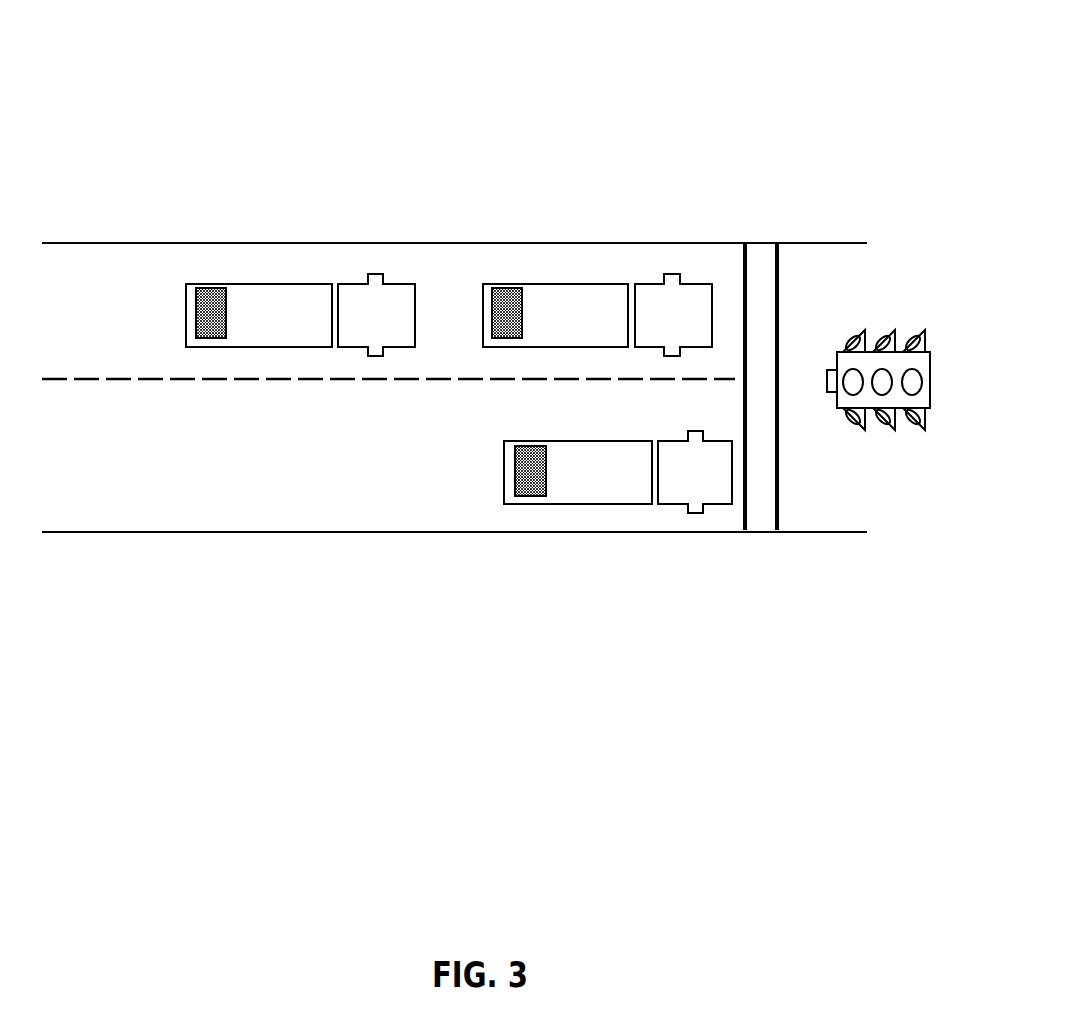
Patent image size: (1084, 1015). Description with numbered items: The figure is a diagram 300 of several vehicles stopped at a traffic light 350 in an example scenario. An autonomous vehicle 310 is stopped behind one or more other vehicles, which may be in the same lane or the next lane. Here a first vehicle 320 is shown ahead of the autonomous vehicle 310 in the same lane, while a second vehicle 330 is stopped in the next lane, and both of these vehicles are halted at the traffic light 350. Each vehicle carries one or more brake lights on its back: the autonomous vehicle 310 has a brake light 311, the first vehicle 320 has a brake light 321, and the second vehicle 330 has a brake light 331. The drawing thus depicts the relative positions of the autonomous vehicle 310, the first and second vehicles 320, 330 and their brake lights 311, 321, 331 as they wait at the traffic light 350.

The diagram 300 is at (873, 102).
The autonomous vehicle 310 is at (278, 284).
The brake light 311 is at (204, 288).
The first vehicle 320 is at (557, 284).
The brake light 321 is at (502, 288).
The second vehicle 330 is at (600, 500).
The brake light 331 is at (524, 496).
The traffic light 350 is at (885, 440).